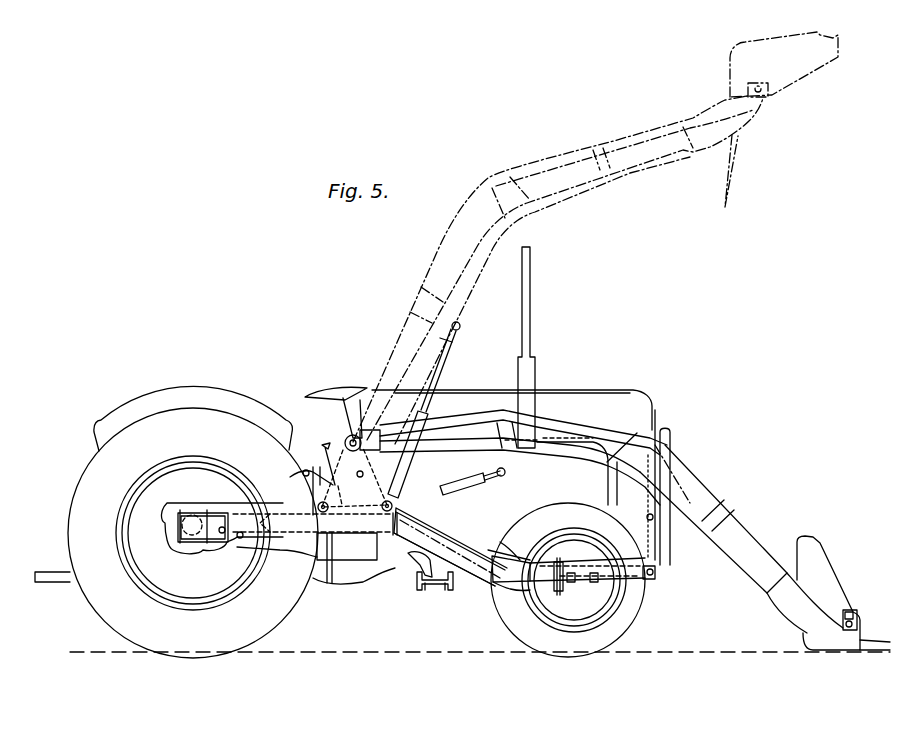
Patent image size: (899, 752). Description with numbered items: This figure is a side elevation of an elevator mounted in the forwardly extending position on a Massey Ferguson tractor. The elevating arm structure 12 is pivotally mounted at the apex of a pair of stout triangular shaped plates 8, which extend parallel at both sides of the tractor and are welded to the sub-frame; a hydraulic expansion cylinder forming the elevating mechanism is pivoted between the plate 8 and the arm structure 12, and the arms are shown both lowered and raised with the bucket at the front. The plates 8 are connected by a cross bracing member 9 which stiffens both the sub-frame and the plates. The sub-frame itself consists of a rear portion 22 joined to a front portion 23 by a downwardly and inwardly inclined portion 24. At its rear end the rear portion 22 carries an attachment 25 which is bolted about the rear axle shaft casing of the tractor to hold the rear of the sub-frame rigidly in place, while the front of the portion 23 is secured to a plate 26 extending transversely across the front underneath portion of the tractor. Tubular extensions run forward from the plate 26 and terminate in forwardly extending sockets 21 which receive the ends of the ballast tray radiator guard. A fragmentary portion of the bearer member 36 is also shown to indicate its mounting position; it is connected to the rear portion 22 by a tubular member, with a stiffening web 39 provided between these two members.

The elevating arm structure 12 is at (510, 228).
The triangular shaped plates 8 is at (385, 477).
The cross bracing member 9 is at (360, 477).
The attachment 25 is at (190, 515).
The rear portion 22 is at (293, 522).
The downwardly and inwardly inclined portion 24 is at (410, 540).
The stiffening web 39 is at (420, 560).
The bearer member 36 is at (437, 583).
The front portion 23 is at (532, 582).
The plate 26 is at (585, 582).
The forwardly extending sockets 21 is at (653, 577).